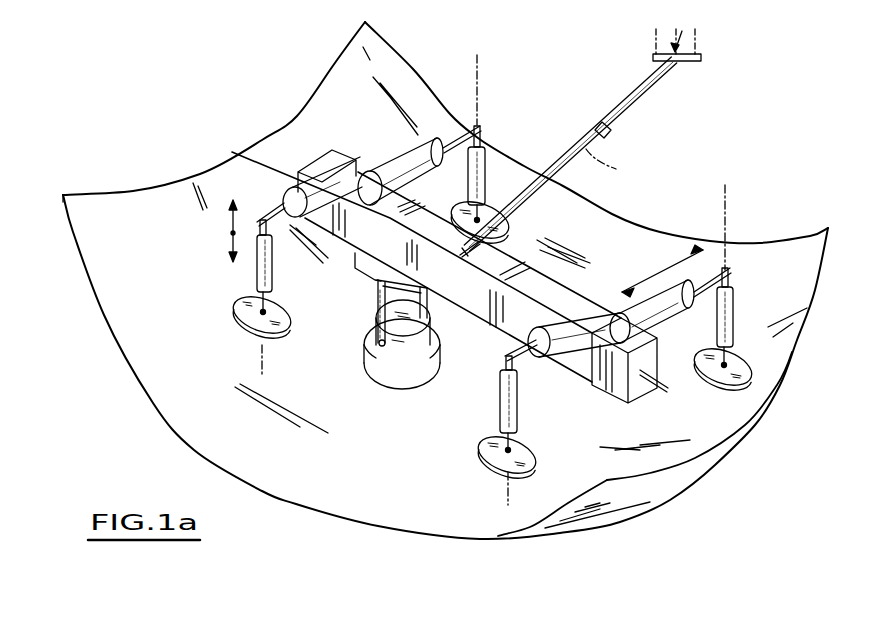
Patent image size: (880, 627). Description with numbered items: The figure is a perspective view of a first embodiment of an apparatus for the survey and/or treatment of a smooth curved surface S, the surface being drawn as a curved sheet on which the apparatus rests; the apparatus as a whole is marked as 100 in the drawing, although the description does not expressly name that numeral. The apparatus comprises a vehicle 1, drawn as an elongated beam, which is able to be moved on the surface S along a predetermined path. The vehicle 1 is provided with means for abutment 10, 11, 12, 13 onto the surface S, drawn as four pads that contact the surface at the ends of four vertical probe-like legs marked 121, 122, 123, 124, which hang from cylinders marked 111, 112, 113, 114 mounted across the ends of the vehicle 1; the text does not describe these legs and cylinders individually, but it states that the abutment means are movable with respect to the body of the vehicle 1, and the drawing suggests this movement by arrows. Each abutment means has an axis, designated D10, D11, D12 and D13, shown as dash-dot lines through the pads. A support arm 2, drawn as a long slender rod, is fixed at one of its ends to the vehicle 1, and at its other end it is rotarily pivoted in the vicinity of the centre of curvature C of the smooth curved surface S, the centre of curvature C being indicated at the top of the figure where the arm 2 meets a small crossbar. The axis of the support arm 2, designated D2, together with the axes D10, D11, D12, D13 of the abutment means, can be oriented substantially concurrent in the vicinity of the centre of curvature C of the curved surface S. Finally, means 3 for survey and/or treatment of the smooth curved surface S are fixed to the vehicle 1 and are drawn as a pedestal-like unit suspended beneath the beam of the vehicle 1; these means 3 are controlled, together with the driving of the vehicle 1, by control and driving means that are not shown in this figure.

The smooth curved surface S is at (130, 214).
The vehicle 1 is at (540, 287).
The measuring apparatus 100 is at (478, 310).
The cylinder 111 is at (392, 165).
The cylinder 112 is at (327, 205).
The cylinder 113 is at (565, 340).
The cylinder 114 is at (660, 313).
The probe 121 is at (487, 173).
The probe 122 is at (257, 277).
The probe 123 is at (518, 418).
The probe 124 is at (732, 320).
The abutment means 10 is at (233, 307).
The abutment means 11 is at (480, 445).
The abutment means 12 is at (717, 388).
The abutment means 13 is at (508, 240).
The axis of abutment means 10 D10 is at (262, 358).
The axis of abutment means 11 D11 is at (508, 488).
The axis of abutment means 12 D12 is at (730, 223).
The axis of abutment means 13 D13 is at (478, 67).
The support arm 2 is at (641, 105).
The axis of the support arm D2 is at (616, 169).
The centre of curvature C is at (678, 47).
The survey and/or treatment means 3 is at (383, 370).